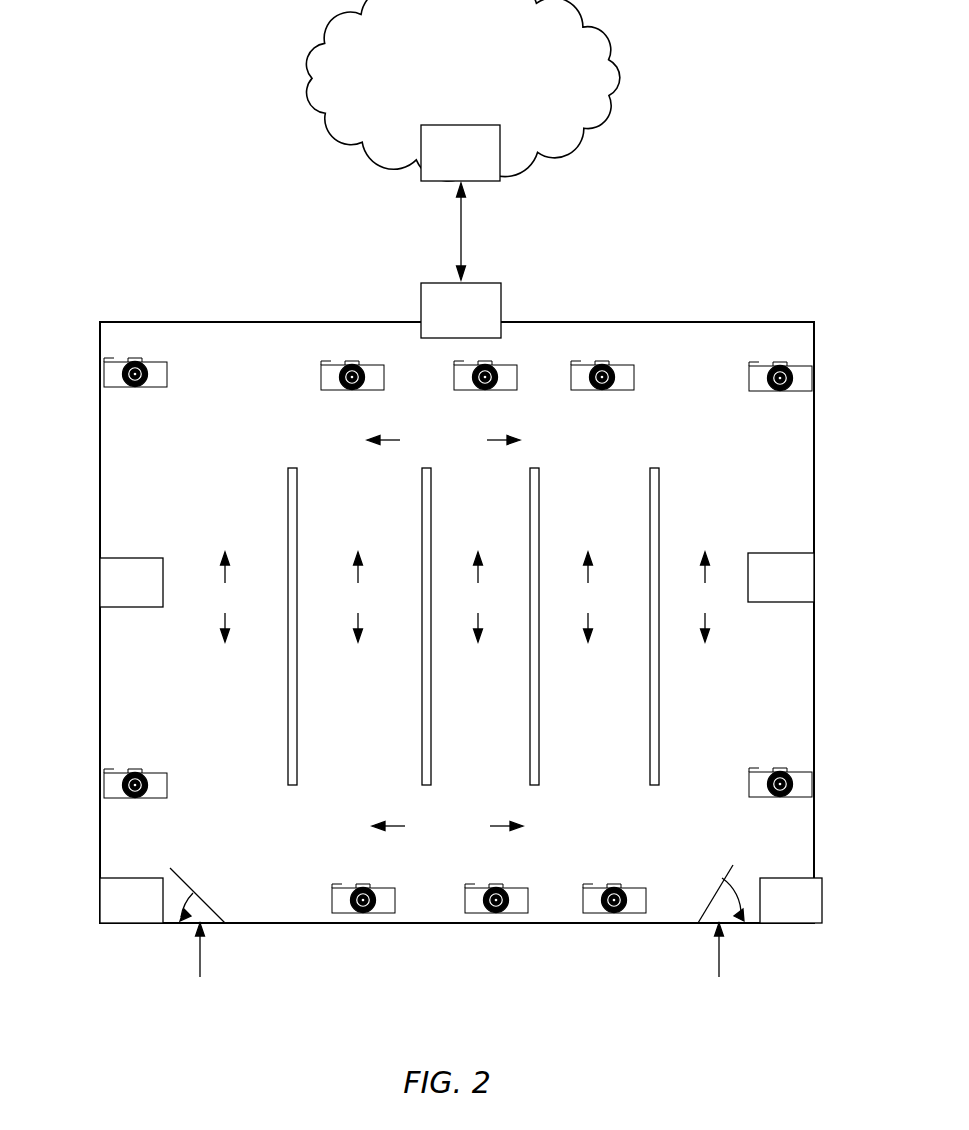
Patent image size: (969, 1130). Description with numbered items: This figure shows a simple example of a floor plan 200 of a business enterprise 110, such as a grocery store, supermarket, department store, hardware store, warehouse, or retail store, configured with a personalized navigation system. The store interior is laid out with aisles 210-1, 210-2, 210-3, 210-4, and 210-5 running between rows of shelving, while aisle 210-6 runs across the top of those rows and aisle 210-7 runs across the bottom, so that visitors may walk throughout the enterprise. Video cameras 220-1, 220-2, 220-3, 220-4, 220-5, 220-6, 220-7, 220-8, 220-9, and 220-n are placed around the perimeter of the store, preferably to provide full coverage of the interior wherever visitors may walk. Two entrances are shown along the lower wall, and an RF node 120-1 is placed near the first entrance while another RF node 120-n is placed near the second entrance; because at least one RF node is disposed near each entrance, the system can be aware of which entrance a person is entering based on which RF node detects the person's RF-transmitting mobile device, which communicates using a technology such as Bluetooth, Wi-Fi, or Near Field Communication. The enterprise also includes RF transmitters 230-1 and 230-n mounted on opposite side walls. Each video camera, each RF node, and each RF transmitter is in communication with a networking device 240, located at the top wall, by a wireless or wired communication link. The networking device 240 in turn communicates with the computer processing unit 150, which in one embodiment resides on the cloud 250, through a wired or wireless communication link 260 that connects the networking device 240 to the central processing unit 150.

The business enterprise 110 is at (818, 318).
The RF node 120-1 is at (100, 923).
The RF node 120-n is at (793, 925).
The computer processing unit 150 is at (460, 153).
The floor plan 200 is at (451, 622).
The aisle 210-1 is at (248, 626).
The aisle 210-2 is at (382, 626).
The aisle 210-3 is at (496, 626).
The aisle 210-4 is at (611, 626).
The aisle 210-5 is at (704, 597).
The aisle 210-6 is at (443, 440).
The aisle 210-7 is at (447, 826).
The video camera 220-1 is at (113, 783).
The video camera 220-2 is at (110, 375).
The video camera 220-3 is at (327, 378).
The video camera 220-4 is at (517, 365).
The video camera 220-5 is at (628, 383).
The video camera 220-6 is at (753, 377).
The video camera 220-7 is at (753, 783).
The video camera 220-8 is at (597, 910).
The video camera 220-9 is at (473, 908).
The video camera 220-n is at (332, 912).
The RF transmitter 230-1 is at (103, 582).
The RF transmitter 230-n is at (813, 578).
The networking device 240 is at (461, 310).
The cloud 250 is at (462, 90).
The communication link 260 is at (468, 240).